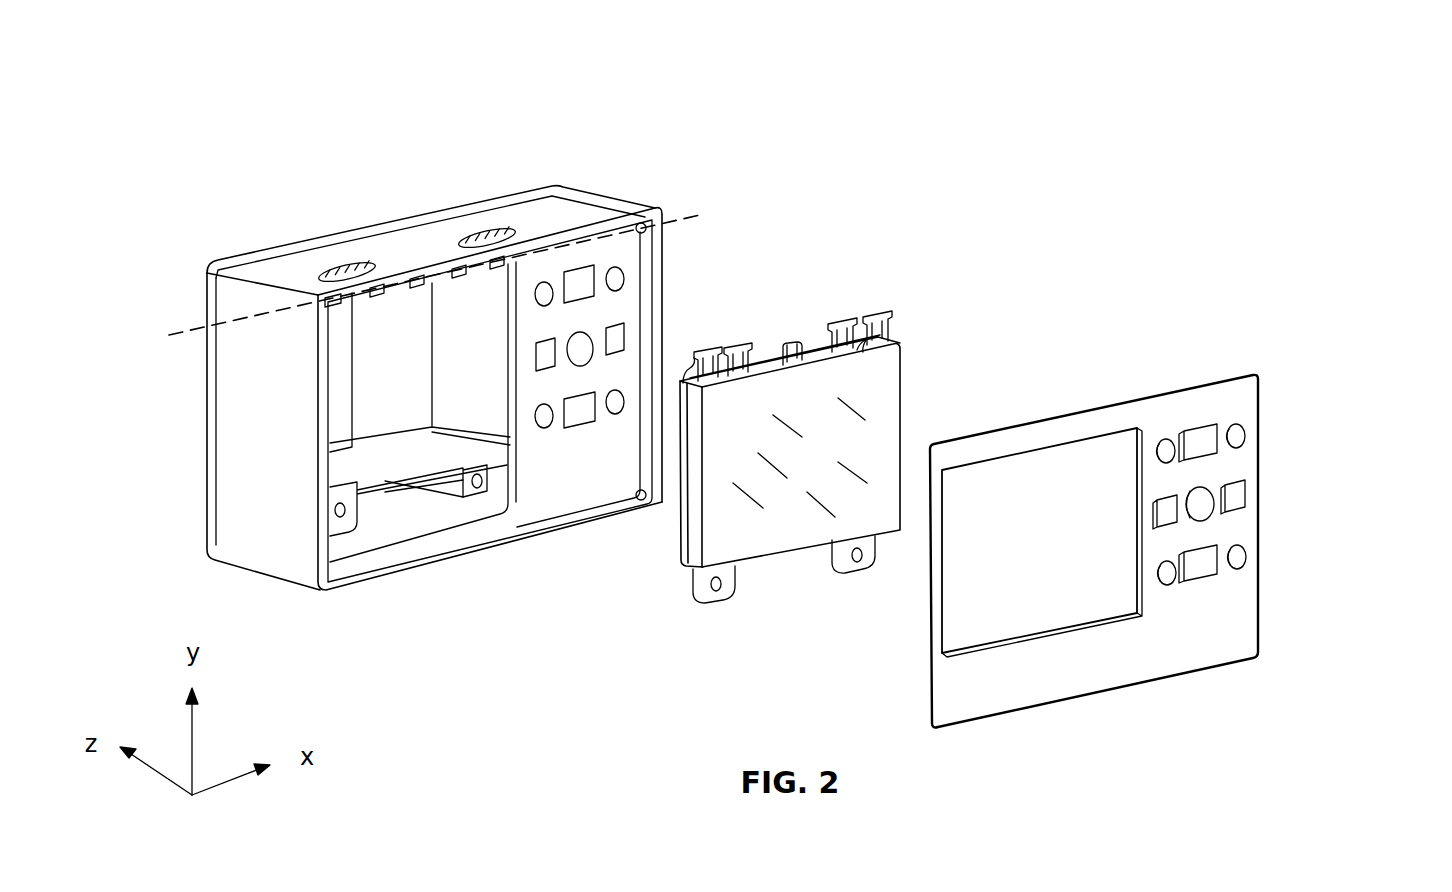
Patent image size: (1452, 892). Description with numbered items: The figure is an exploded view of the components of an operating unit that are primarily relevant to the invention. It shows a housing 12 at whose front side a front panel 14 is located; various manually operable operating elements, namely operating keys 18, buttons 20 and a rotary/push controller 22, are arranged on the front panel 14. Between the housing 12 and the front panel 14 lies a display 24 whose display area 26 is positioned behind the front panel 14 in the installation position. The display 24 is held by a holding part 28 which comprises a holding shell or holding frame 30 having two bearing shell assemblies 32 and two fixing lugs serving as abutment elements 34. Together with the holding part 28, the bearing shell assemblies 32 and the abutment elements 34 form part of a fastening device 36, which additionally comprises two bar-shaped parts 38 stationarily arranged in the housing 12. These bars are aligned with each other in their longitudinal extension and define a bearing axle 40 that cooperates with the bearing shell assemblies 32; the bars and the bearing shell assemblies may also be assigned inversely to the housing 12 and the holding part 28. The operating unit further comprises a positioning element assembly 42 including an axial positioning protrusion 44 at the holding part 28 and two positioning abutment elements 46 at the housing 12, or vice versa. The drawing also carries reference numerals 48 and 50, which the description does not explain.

The housing 12 is at (353, 247).
The front panel 14 is at (1138, 660).
The operating keys 18 is at (1200, 447).
The buttons 20 is at (1162, 442).
The rotary/push controller 22 is at (1247, 502).
The display 24 is at (863, 403).
The display area 26 is at (780, 540).
The holding part 28 is at (817, 302).
The holding frame 30 is at (692, 537).
The bearing shell assemblies 32 is at (731, 310).
The abutment elements 34 is at (725, 592).
The fastening device 36 is at (982, 303).
The bar-shaped parts 38 is at (351, 293).
The bearing axle 40 is at (189, 331).
The positioning element assembly 42 is at (490, 207).
The axial positioning protrusion 44 is at (796, 346).
The positioning abutment elements 46 is at (407, 280).
The clip receivers 48 is at (683, 358).
The snap hooks 50 is at (705, 352).